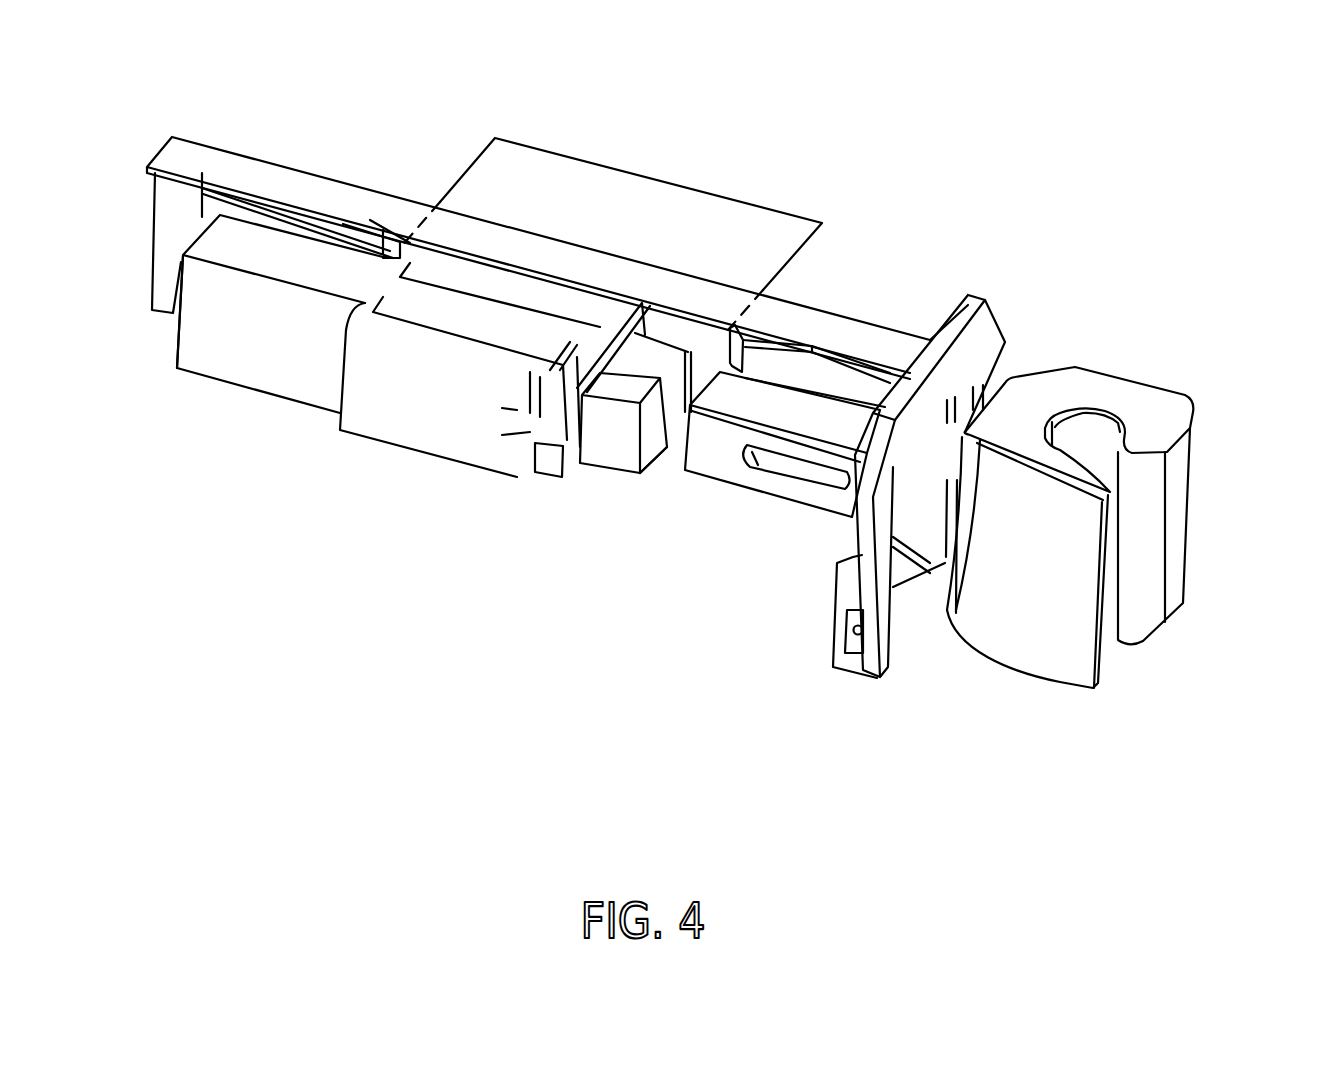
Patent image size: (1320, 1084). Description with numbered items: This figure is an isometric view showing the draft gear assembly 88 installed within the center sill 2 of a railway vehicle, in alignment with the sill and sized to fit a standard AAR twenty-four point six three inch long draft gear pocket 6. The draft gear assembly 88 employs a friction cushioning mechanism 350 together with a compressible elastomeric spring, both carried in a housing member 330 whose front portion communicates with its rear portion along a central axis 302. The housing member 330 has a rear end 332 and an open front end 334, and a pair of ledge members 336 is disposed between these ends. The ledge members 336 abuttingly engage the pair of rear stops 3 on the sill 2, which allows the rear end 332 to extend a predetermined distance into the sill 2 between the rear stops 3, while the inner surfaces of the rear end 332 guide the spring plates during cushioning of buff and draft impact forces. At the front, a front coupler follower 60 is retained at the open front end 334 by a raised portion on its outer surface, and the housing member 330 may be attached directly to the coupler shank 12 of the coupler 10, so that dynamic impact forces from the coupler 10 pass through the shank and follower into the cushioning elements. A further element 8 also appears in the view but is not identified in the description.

The sill 2 is at (832, 300).
The rear stops 3 is at (383, 240).
The draft gear pocket 6 is at (667, 183).
The tab 8 is at (733, 325).
The coupler 10 is at (1023, 637).
The coupler shank 12 is at (800, 505).
The front coupler follower 60 is at (657, 495).
The draft gear assembly 88 is at (398, 492).
The central axis 302 is at (1197, 573).
The housing member 330 is at (300, 410).
The rear end 332 is at (178, 355).
The open front end 334 is at (521, 432).
The ledge members 336 is at (342, 402).
The friction cushioning mechanism 350 is at (595, 492).